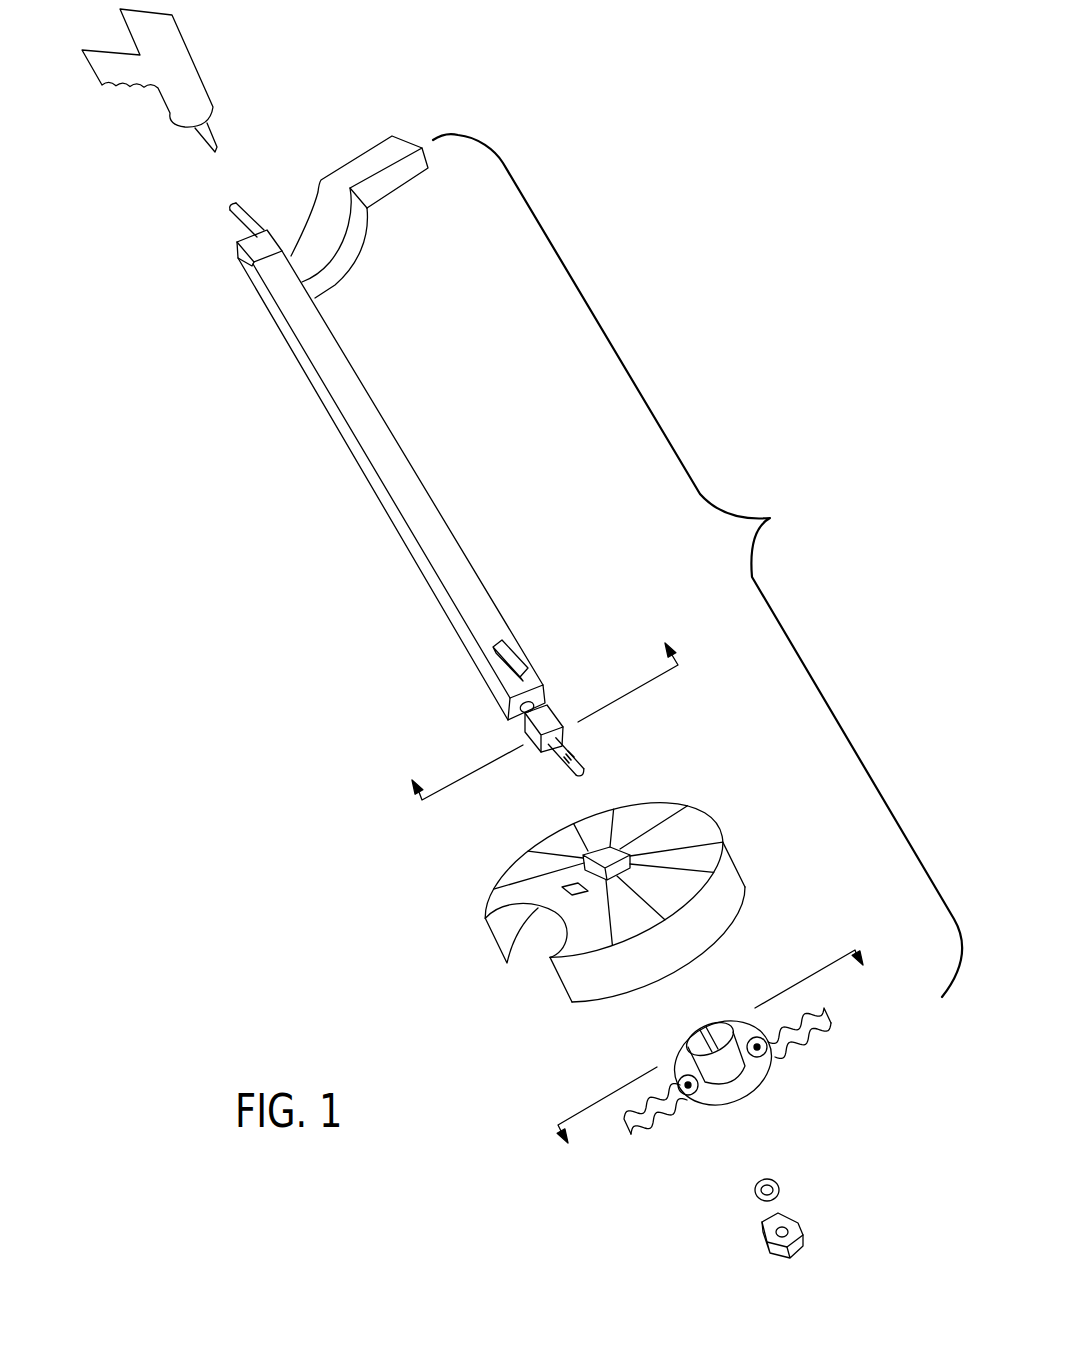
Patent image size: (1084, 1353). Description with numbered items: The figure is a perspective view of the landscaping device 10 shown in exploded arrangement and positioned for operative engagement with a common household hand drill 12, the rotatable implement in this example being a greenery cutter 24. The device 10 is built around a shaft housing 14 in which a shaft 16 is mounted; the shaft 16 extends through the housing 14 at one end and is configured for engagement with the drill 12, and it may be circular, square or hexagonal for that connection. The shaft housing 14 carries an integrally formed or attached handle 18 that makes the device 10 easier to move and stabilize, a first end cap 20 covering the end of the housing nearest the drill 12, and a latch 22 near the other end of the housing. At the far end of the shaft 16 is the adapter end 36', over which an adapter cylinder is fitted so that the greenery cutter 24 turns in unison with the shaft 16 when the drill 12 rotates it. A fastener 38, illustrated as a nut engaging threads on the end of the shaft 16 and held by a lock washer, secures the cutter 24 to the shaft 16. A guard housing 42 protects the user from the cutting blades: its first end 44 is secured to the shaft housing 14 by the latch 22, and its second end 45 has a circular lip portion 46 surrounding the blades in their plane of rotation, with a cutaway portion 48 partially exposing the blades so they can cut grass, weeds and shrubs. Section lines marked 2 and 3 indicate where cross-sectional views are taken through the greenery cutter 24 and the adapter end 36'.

The landscaping device 10 is at (697, 565).
The hand drill 12 is at (192, 27).
The shaft housing 14 is at (422, 435).
The shaft 16 is at (250, 212).
The handle 18 is at (382, 229).
The first end cap 20 is at (237, 256).
The latch 22 is at (502, 648).
The adapter end 36' is at (567, 715).
The guard housing 42 is at (687, 802).
The first end 44 is at (597, 847).
The second end 45 is at (750, 862).
The circular lip portion 46 is at (622, 996).
The cutaway portion 48 is at (527, 975).
The greenery cutter 24 is at (764, 969).
The fastener 38 is at (740, 1213).
The section line 2- 2 is at (716, 1062).
The section line 3- 3 is at (538, 704).